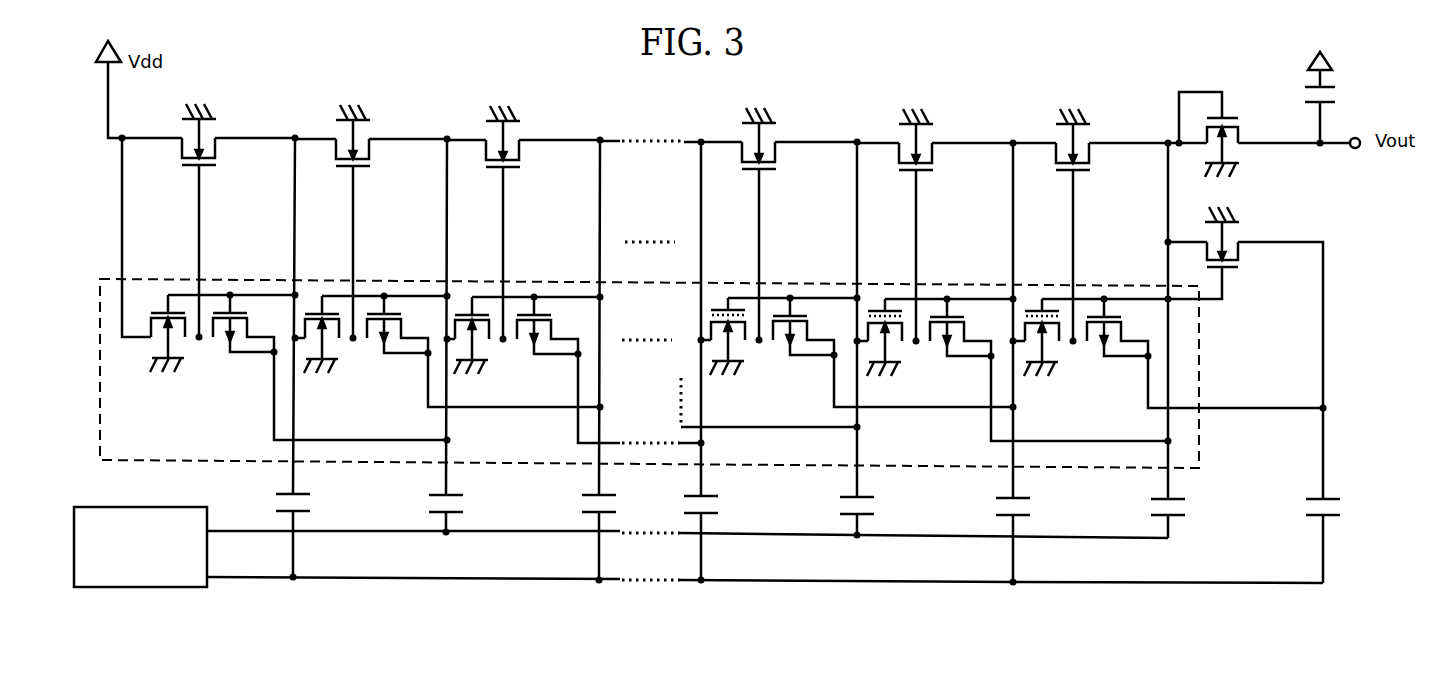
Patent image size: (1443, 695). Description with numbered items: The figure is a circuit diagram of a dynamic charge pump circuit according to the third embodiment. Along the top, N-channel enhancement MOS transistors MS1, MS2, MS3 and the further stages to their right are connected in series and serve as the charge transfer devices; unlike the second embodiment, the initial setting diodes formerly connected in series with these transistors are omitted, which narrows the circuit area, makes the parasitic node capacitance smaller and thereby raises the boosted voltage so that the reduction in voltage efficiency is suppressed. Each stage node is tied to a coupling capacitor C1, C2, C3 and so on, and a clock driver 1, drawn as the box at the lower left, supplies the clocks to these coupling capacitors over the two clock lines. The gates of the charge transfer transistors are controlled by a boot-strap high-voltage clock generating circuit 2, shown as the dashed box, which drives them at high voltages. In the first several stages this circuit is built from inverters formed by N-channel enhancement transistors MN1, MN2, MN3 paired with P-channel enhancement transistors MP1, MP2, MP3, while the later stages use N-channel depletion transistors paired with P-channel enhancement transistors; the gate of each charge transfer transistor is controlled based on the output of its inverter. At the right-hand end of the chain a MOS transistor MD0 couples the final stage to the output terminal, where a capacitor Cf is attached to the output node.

The clock driver 1 is at (170, 587).
The boot-strap high-voltage clock generating circuit 2 is at (1203, 387).
The N-channel enhancement MOS transistor MS1 is at (223, 220).
The N-channel enhancement MOS transistor MS2 is at (378, 221).
The N-channel enhancement MOS transistor MS3 is at (529, 222).
The N-channel enhancement transistor MN1 is at (174, 350).
The N-channel enhancement transistor MN2 is at (328, 351).
The N-channel enhancement transistor MN3 is at (479, 352).
The P-channel enhancement transistor MP1 is at (223, 334).
The P-channel enhancement transistor MP2 is at (377, 335).
The P-channel enhancement transistor MP3 is at (527, 336).
The coupling capacitor C1 is at (306, 507).
The coupling capacitor C2 is at (459, 508).
The coupling capacitor C3 is at (613, 508).
The output diode-connected transistor MD0 is at (1225, 134).
The output smoothing capacitor Cf is at (1332, 97).